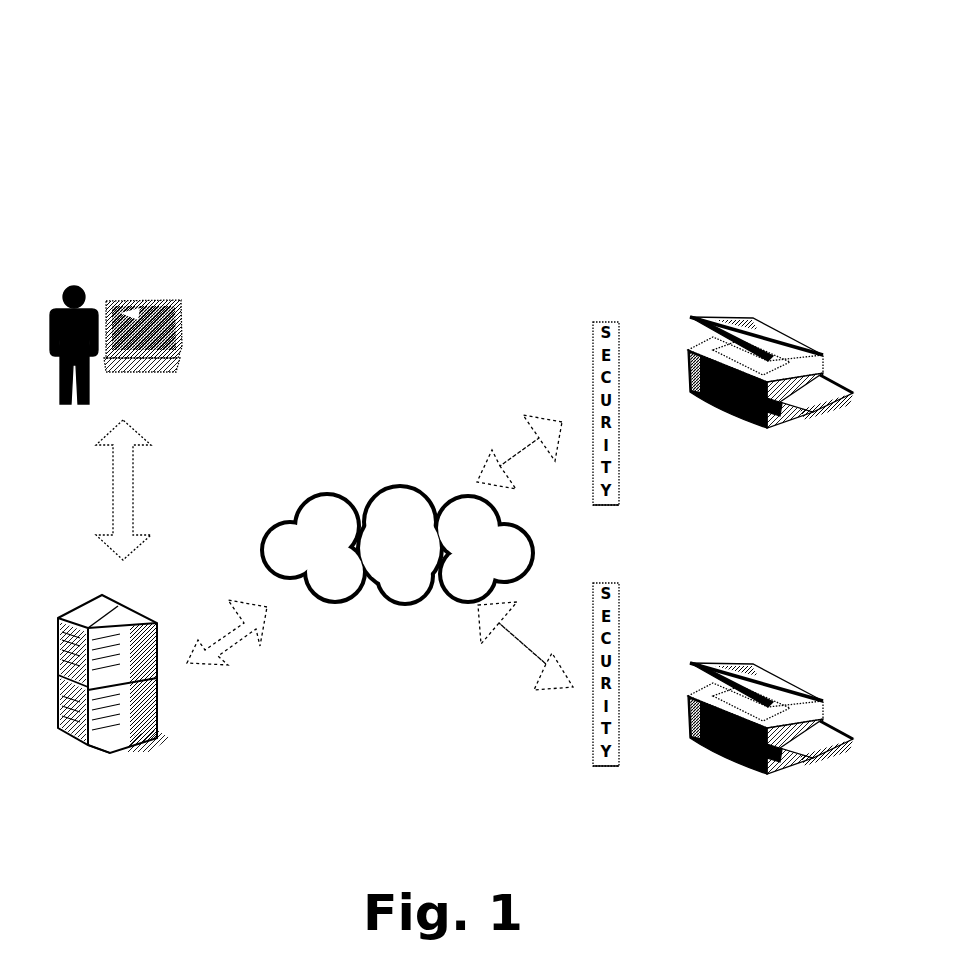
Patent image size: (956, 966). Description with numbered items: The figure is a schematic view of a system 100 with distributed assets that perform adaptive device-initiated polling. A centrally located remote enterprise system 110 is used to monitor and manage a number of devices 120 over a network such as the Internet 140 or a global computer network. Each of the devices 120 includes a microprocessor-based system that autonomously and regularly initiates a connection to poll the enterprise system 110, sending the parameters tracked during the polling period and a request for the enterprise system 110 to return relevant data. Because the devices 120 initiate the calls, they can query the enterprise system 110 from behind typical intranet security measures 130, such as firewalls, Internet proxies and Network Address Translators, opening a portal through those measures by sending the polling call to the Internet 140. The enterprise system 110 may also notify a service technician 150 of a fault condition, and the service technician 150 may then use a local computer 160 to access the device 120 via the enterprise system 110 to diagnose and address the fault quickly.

The system 100 is at (392, 72).
The enterprise system 110 is at (140, 748).
The devices 120 is at (745, 316).
The intranet security measures 130 is at (605, 320).
The Internet 140 is at (424, 581).
The service technician 150 is at (68, 282).
The local computer 160 is at (182, 298).